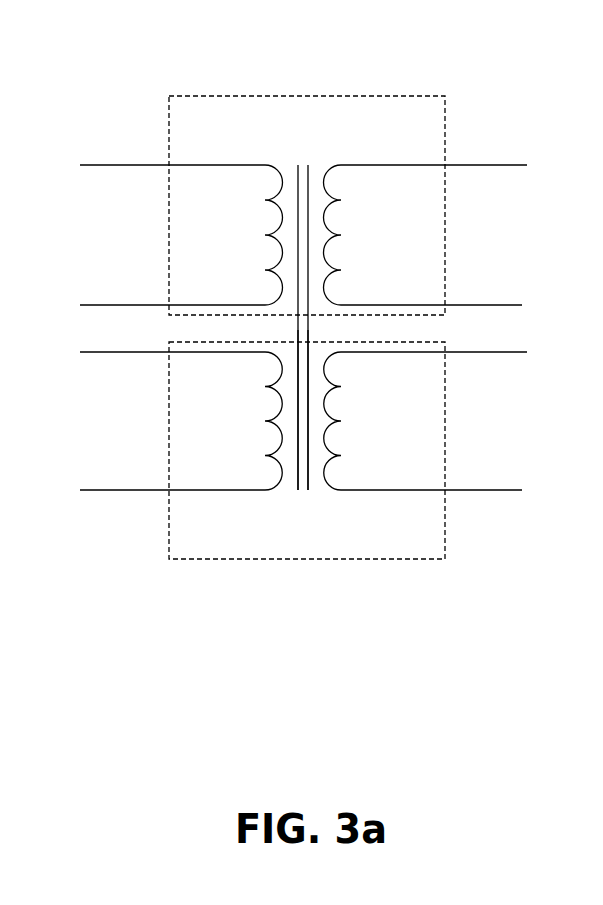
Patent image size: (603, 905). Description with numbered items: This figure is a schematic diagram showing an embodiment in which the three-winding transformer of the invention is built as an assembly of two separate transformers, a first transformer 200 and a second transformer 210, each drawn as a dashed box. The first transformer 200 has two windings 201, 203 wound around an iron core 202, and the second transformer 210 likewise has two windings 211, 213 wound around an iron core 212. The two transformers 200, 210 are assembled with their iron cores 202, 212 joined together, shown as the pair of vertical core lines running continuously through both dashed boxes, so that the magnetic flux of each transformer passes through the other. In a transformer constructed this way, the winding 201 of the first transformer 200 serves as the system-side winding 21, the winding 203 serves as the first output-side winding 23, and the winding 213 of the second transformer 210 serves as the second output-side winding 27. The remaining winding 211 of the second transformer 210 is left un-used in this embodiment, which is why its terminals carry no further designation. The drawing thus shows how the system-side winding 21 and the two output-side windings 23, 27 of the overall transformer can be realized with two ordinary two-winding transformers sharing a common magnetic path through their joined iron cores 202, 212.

The transformer 210 is at (398, 92).
The transformer 200 is at (398, 560).
The iron core 212 is at (305, 303).
The iron core 202 is at (306, 432).
The winding 211 is at (181, 235).
The winding 213 is at (385, 235).
The winding 201 is at (225, 421).
The winding 203 is at (384, 421).
The system-side winding 21 is at (121, 421).
The first output-side winding 23 is at (498, 421).
The second output-side winding 27 is at (496, 235).